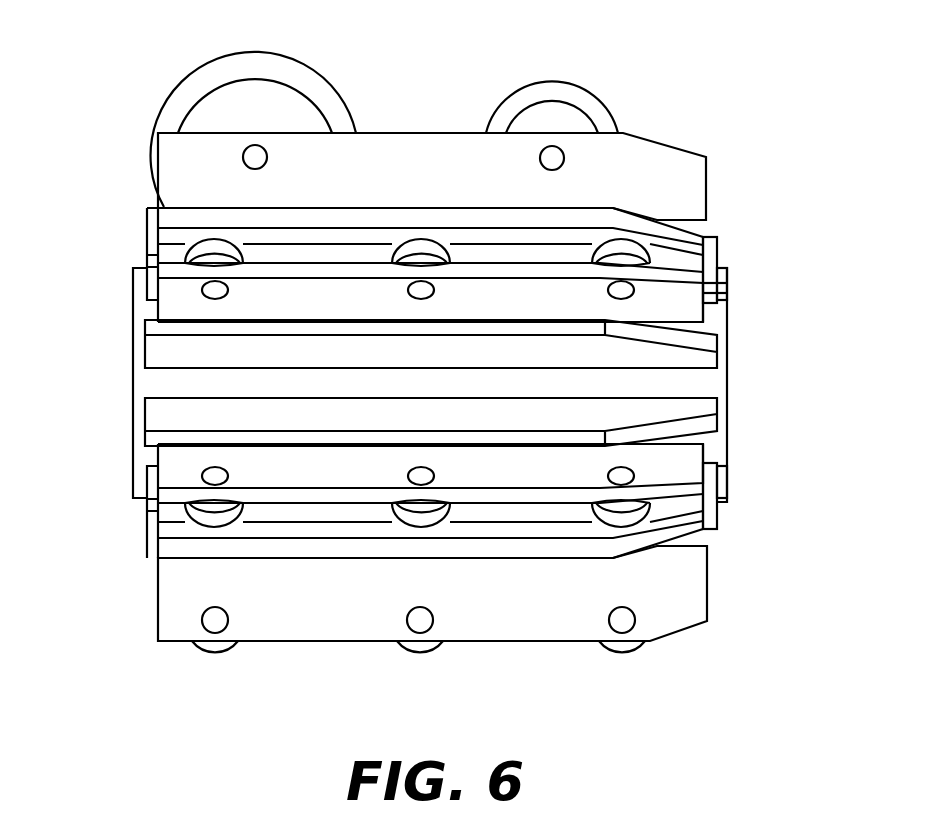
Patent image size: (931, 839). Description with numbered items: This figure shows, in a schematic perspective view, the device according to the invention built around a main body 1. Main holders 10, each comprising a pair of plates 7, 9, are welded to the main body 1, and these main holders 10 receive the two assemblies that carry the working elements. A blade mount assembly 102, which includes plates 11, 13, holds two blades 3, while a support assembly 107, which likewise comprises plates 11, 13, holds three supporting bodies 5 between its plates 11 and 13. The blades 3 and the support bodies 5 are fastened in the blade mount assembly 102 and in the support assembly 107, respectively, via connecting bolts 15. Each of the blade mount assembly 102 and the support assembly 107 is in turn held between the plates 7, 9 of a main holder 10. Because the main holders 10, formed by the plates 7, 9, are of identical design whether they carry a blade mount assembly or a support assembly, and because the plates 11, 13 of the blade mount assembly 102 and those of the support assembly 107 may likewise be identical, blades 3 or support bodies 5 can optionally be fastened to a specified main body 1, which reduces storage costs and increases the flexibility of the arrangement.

The main body 1 is at (720, 383).
The blade 3 is at (242, 88).
The support body 5 is at (212, 243).
The plate 7 is at (722, 296).
The plate 9 is at (712, 252).
The main holder 10 is at (153, 480).
The plate 11 is at (167, 235).
The plate 13 is at (417, 345).
The connecting bolt 15 is at (258, 153).
The blade mount assembly 102 is at (455, 152).
The support assembly 107 is at (688, 290).